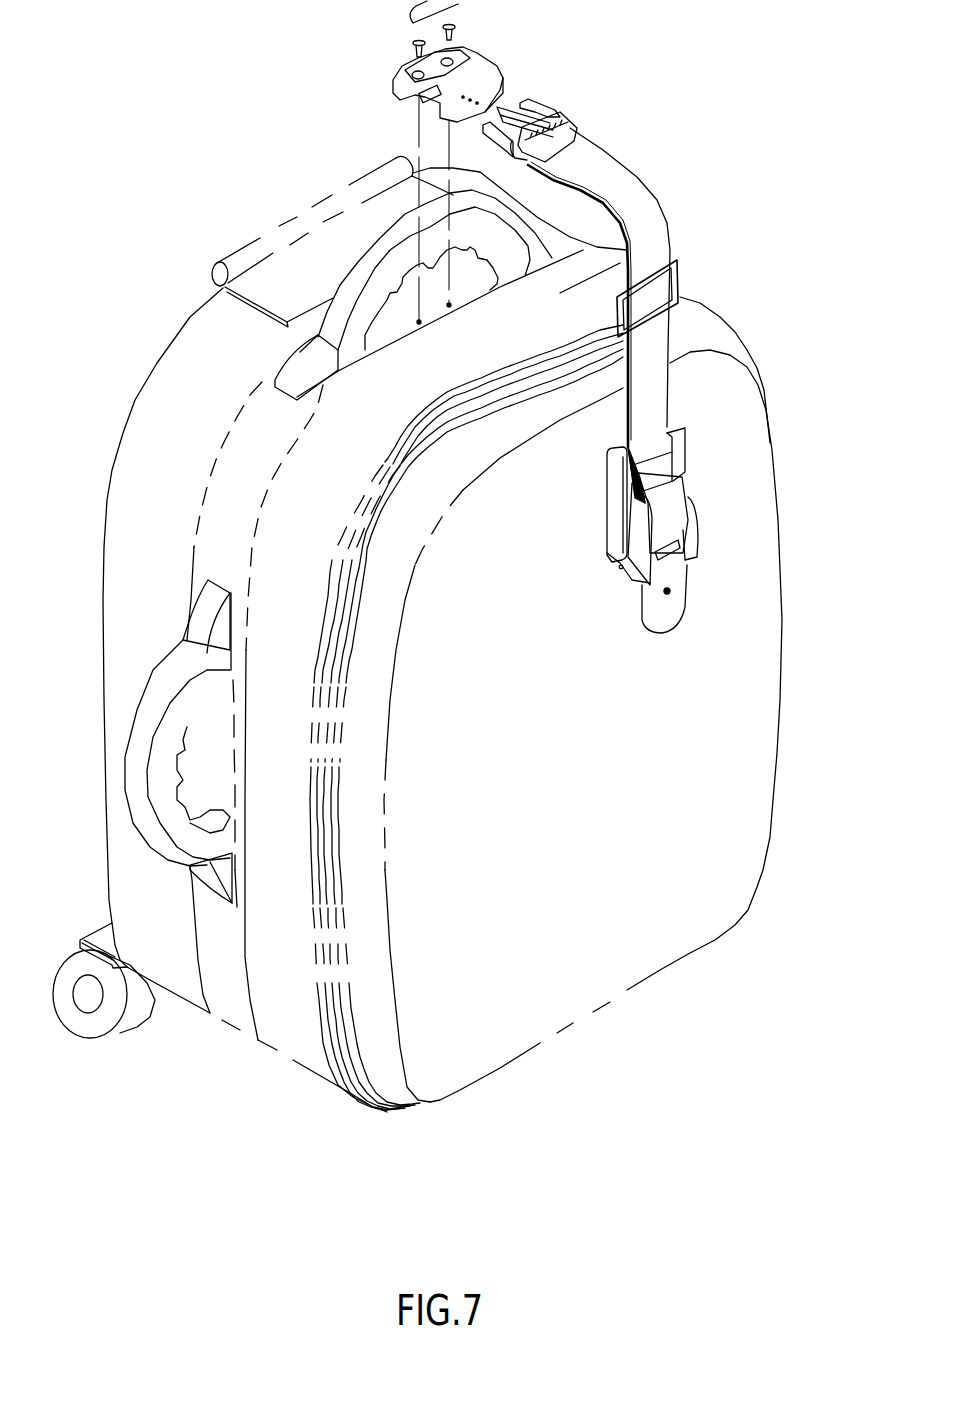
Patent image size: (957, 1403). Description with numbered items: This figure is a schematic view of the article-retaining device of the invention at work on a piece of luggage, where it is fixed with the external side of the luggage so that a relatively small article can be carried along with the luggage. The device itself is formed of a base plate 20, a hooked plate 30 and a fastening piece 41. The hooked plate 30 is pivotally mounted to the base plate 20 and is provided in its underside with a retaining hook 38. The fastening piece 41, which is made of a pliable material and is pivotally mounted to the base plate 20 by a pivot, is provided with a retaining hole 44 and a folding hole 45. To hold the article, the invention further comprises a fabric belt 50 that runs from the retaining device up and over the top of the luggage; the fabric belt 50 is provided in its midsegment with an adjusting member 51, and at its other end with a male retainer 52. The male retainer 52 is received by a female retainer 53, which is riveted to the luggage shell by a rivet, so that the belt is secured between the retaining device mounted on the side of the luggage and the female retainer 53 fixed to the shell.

The base plate 20 is at (721, 418).
The hooked plate 30 is at (759, 524).
The retaining hook 38 is at (687, 560).
The fastening piece 41 is at (730, 486).
The retaining hole 44 is at (738, 599).
The folding hole 45 is at (678, 532).
The fabric belt 50 is at (626, 287).
The adjusting member 51 is at (684, 291).
The male retainer 52 is at (557, 108).
The female retainer 53 is at (477, 78).